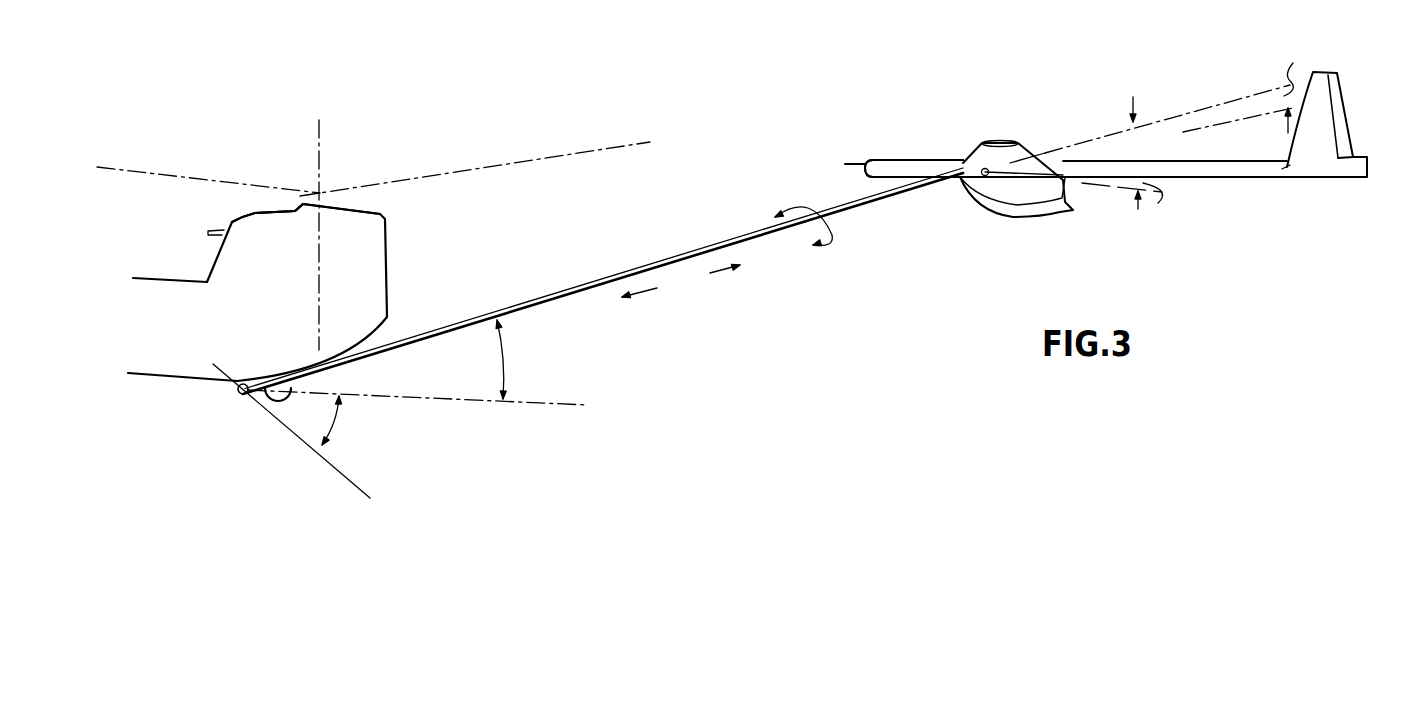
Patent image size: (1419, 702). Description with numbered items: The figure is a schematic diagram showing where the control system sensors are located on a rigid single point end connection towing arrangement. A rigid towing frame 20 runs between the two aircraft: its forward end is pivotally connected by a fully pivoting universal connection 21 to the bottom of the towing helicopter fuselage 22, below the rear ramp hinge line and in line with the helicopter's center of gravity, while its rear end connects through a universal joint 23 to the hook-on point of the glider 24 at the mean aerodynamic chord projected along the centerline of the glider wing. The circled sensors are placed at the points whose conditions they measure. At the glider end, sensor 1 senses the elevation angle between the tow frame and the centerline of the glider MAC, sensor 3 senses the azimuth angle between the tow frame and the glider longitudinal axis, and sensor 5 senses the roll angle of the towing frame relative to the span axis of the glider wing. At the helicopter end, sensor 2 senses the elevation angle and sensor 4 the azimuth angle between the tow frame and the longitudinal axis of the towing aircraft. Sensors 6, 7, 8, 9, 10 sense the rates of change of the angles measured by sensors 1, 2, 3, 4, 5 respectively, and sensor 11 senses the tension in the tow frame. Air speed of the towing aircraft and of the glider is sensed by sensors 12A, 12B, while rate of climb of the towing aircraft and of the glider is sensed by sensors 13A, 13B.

The elevation angle sensor 1 is at (1123, 207).
The elevation angle sensor 2 is at (514, 359).
The azimuth angle sensor 3 is at (1276, 81).
The azimuth angle sensor 4 is at (342, 421).
The roll angle sensor 5 is at (811, 242).
The rate of change sensor 6 is at (1172, 211).
The rate of change sensor 7 is at (539, 359).
The rate of change sensor 8 is at (1254, 83).
The rate of change sensor 9 is at (417, 421).
The rate of change sensor 10 is at (831, 245).
The tension sensor 11 is at (681, 280).
The air speed sensor 12A is at (250, 208).
The air speed sensor 12B is at (897, 152).
The rate of climb sensor 13A is at (270, 200).
The rate of climb sensor 13B is at (937, 152).
The towing frame 20 is at (733, 240).
The universal connection 21 is at (238, 394).
The towing helicopter fuselage 22 is at (172, 270).
The universal joint 23 is at (973, 242).
The glider 24 is at (1214, 191).